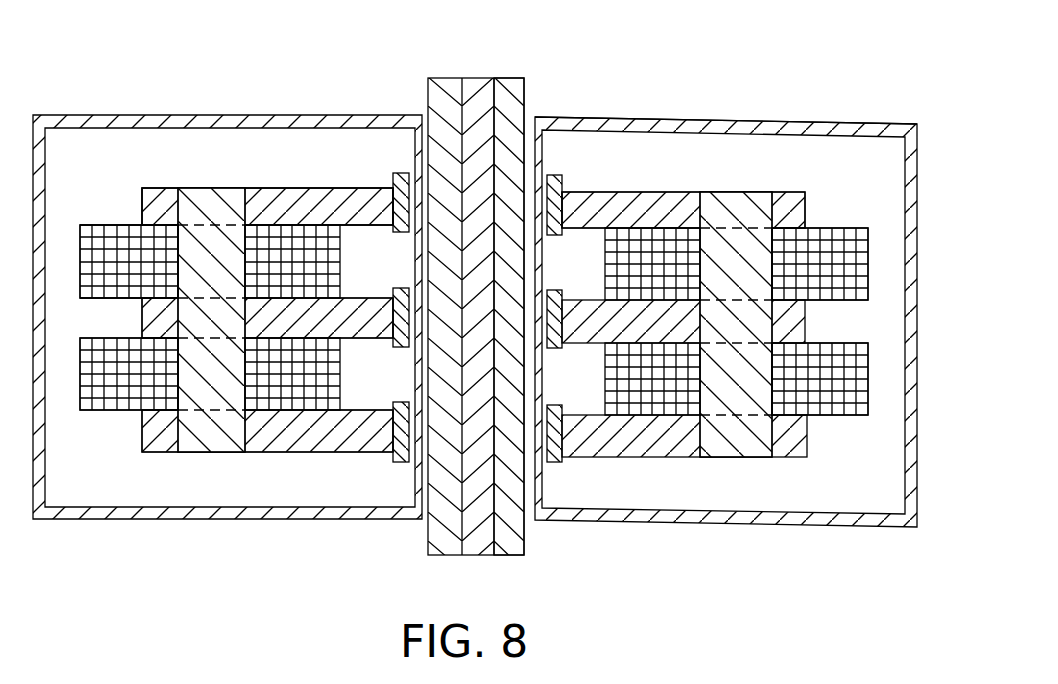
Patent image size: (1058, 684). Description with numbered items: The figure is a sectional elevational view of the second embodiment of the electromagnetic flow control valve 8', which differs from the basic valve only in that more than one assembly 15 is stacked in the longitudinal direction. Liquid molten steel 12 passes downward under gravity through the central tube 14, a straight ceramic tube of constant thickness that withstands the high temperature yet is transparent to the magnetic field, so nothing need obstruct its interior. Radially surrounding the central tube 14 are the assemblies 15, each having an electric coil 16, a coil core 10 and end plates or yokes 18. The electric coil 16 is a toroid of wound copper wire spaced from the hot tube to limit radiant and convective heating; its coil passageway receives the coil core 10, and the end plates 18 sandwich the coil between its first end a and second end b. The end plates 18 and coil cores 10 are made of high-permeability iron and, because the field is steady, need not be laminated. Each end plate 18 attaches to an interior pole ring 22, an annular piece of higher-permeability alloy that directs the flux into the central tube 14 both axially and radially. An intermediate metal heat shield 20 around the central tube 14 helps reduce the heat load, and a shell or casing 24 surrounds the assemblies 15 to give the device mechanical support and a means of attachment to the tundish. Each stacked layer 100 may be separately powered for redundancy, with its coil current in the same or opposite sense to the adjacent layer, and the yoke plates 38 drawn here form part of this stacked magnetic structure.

The electromagnetic flow control valve 8' is at (726, 71).
The coil core 10 is at (204, 245).
The liquid molten steel 12 is at (471, 80).
The central tube 14 is at (514, 79).
The assembly 15 is at (300, 188).
The electric coil 16 is at (122, 226).
The end plate 18 is at (255, 188).
The intermediate metal heat shield 20 is at (541, 487).
The interior pole ring 22 is at (401, 232).
The shell 24 is at (172, 520).
The yoke plate 38 is at (352, 188).
The layer 100 is at (84, 224).
The first end a is at (107, 224).
The second end b is at (85, 303).